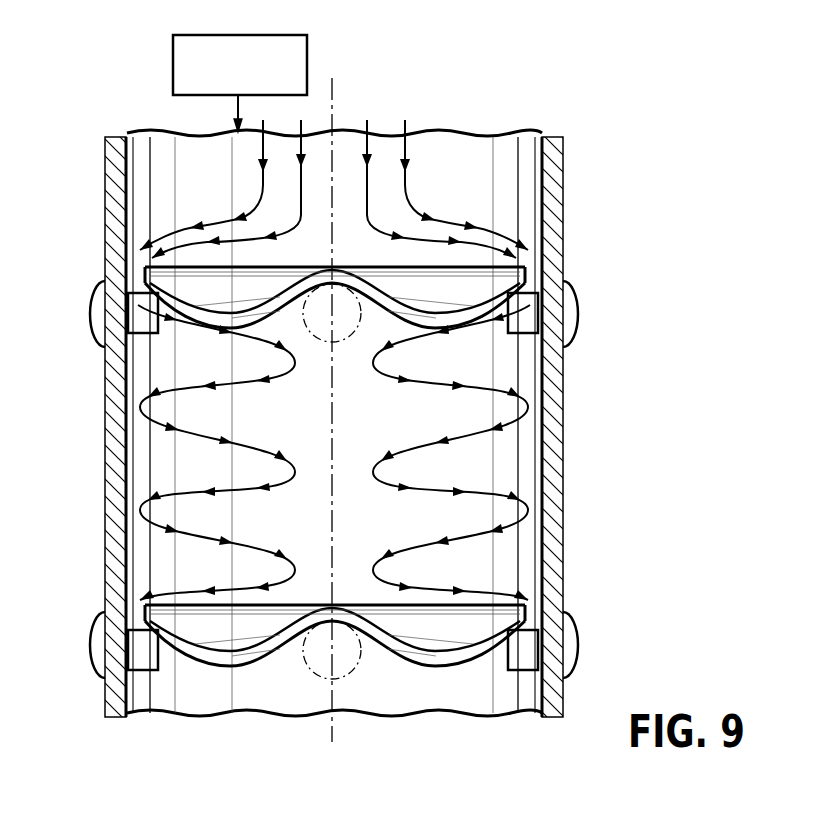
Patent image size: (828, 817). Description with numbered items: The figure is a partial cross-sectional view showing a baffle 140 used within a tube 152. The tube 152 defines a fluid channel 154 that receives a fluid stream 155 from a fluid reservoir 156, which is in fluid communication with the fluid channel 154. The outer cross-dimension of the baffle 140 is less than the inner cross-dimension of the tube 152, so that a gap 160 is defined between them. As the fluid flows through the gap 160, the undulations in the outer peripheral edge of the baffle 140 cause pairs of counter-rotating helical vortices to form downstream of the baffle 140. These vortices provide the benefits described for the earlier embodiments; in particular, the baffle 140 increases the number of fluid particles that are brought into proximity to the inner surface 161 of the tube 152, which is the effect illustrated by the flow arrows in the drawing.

The baffle 140 is at (382, 262).
The tube 152 is at (104, 172).
The fluid channel 154 is at (132, 449).
The fluid stream 155 is at (407, 124).
The fluid reservoir 156 is at (307, 57).
The gap 160 is at (543, 277).
The inner surface 161 is at (536, 437).